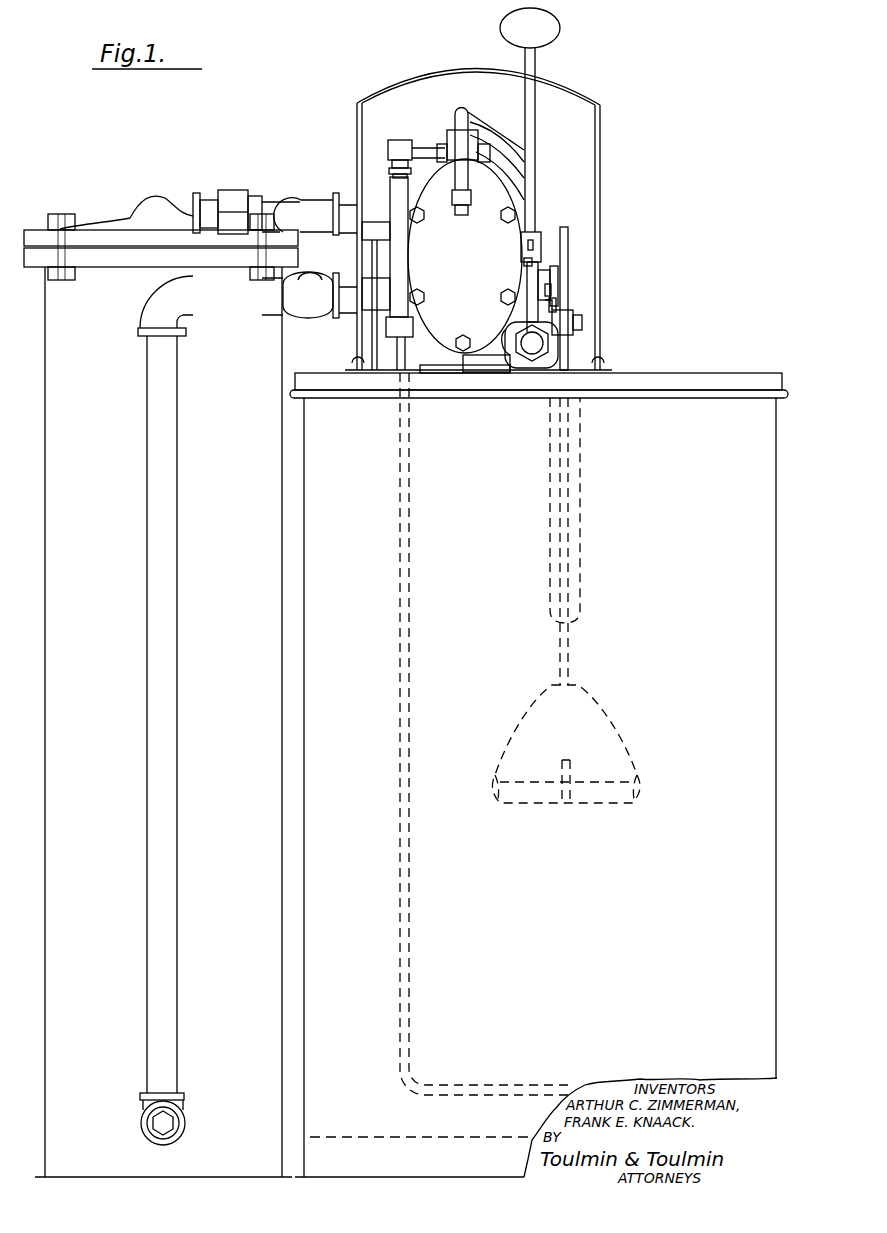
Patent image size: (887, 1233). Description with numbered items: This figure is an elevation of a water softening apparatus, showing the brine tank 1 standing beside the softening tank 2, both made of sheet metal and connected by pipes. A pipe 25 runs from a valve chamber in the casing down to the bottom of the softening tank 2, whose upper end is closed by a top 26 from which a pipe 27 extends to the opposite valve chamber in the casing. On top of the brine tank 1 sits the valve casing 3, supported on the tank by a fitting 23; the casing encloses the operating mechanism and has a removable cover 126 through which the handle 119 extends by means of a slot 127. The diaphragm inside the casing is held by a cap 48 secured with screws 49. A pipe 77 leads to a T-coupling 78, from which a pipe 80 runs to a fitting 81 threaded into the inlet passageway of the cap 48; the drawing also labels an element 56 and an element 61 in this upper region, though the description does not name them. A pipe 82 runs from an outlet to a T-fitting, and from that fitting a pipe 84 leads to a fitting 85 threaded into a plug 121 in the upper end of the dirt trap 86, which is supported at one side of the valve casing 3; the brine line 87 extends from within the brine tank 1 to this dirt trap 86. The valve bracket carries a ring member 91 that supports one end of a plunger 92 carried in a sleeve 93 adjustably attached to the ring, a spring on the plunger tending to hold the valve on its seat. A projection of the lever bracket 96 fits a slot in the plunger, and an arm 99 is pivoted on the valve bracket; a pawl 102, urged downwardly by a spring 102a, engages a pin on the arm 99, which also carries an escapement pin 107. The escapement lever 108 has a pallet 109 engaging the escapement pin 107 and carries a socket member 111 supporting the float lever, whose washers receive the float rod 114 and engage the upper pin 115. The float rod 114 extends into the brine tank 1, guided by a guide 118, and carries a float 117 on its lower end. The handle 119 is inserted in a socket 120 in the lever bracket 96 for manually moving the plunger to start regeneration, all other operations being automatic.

The brine tank 1 is at (320, 674).
The softening tank 2 is at (272, 740).
The valve casing 3 is at (575, 312).
The fitting 23 is at (444, 373).
The pipe 25 is at (178, 690).
The top 26 is at (98, 238).
The pipe 27 is at (318, 198).
The cap 48 is at (452, 298).
The screws 49 is at (420, 290).
The guide block 56 is at (448, 130).
The spring arm 61 is at (522, 136).
The pipe 77 is at (480, 118).
The T-coupling 78 is at (462, 110).
The pipe 80 is at (456, 170).
The fitting 81 is at (470, 215).
The pipe 82 is at (522, 172).
The pipe 84 is at (426, 148).
The fitting 85 is at (405, 142).
The dirt trap 86 is at (392, 198).
The brine line 87 is at (403, 368).
The ring member 91 is at (558, 348).
The plunger 92 is at (526, 352).
The sleeve 93 is at (533, 360).
The lever bracket 96 is at (520, 318).
The arm 99 is at (545, 272).
The pawl 102 is at (527, 284).
The spring 102a is at (524, 264).
The escapement pin 107 is at (550, 288).
The escapement lever 108 is at (578, 310).
The pallet 109 is at (556, 304).
The socket member 111 is at (583, 322).
The float rod 114 is at (560, 272).
The upper pin 115 is at (568, 240).
The float 117 is at (600, 712).
The guide 118 is at (582, 486).
The handle 119 is at (523, 60).
The socket 120 is at (532, 240).
The plug 121 is at (395, 165).
The removable cover 126 is at (582, 92).
The slot 127 is at (538, 70).